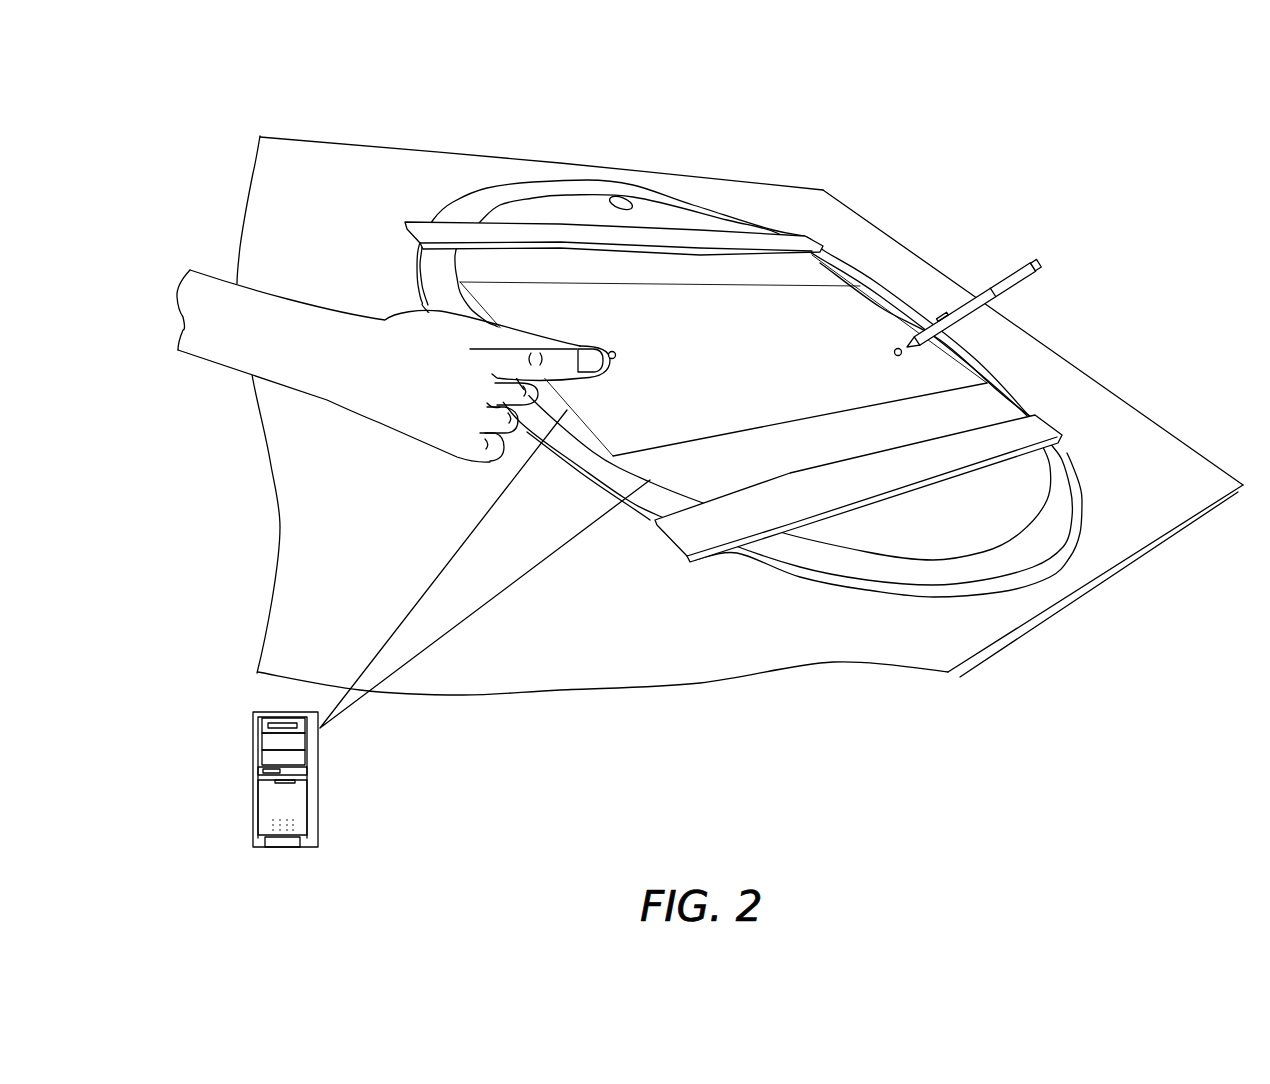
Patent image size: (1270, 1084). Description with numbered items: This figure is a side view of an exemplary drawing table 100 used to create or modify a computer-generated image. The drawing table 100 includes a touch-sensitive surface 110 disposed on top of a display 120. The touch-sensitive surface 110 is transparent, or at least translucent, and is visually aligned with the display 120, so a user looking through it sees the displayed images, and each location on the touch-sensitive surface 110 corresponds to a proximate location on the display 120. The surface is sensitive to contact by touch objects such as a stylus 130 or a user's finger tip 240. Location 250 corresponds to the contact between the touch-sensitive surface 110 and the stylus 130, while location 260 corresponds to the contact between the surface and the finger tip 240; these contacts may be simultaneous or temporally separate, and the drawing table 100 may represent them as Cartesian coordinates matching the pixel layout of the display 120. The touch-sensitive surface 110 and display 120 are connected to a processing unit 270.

The drawing table 100 is at (810, 132).
The touch-sensitive surface 110 is at (823, 262).
The display 120 is at (935, 374).
The stylus 130 is at (1027, 278).
The user's finger tip 240 is at (470, 349).
The location 250 is at (894, 351).
The location 260 is at (616, 354).
The processing unit 270 is at (275, 850).